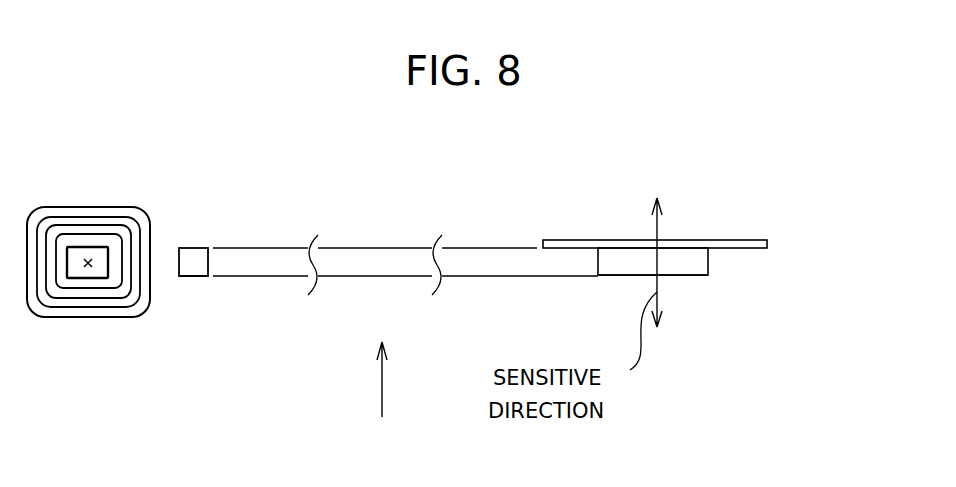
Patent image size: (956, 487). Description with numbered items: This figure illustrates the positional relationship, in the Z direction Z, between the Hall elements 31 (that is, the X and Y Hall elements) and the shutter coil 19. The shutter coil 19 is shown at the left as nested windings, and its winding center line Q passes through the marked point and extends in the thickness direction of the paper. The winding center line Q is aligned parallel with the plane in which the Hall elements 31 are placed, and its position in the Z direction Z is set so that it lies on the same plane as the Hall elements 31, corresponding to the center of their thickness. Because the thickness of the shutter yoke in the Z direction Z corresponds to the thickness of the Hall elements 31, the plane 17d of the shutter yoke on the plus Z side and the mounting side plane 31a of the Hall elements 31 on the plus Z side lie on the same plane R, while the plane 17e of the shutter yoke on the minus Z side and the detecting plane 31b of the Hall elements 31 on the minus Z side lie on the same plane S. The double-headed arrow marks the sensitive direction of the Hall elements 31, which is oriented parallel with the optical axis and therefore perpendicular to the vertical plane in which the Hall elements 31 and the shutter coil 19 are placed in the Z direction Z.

The shutter coil 19 is at (67, 317).
The winding center line Q is at (88, 256).
The plane of the shutter yoke on the +Z side 17d is at (198, 242).
The plane of the shutter yoke on the −Z side 17e is at (198, 282).
The plane R is at (487, 247).
The plane S is at (485, 277).
The Hall element 31 is at (708, 264).
The mounting side plane 31a is at (704, 235).
The detecting plane 31b is at (707, 282).
The Z direction Z is at (390, 374).